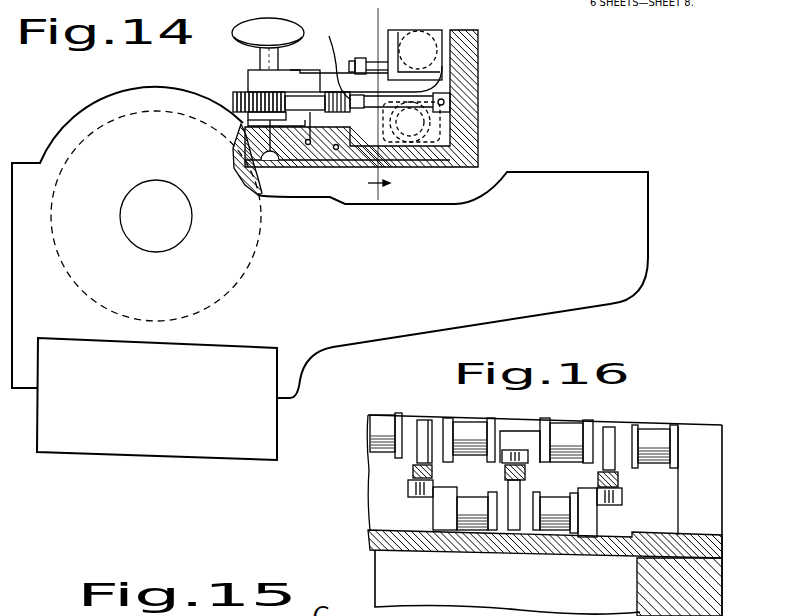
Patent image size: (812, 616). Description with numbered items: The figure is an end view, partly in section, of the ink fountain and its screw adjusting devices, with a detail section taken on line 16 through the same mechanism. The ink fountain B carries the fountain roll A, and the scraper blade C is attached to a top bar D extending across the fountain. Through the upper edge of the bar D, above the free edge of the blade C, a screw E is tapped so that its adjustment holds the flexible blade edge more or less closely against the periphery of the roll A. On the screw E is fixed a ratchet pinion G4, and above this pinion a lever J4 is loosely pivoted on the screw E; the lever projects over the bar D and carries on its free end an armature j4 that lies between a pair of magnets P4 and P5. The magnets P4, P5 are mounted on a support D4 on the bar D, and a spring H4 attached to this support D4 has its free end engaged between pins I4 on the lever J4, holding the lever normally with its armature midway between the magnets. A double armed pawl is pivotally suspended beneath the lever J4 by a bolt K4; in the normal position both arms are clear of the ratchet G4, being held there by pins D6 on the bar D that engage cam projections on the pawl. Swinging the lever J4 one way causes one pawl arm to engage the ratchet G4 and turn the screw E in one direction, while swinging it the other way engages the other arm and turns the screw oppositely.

In FIG. 14, the fountain roll A is at (238, 190).
In FIG. 14, the ink fountain B is at (330, 273).
In FIG. 16, the ink fountain B is at (722, 582).
In FIG. 14, the scraper blade C is at (296, 166).
In FIG. 14, the top bar D is at (460, 168).
In FIG. 16, the top bar D is at (710, 537).
In FIG. 14, the support D4 is at (467, 90).
In FIG. 16, the support D4 is at (437, 425).
In FIG. 14, the pins D6 is at (240, 125).
In FIG. 14, the screw E is at (234, 28).
In FIG. 14, the ratchet pinion G4 is at (236, 96).
In FIG. 14, the spring H4 is at (383, 66).
In FIG. 16, the spring H4 is at (410, 494).
In FIG. 14, the pins I4 is at (338, 58).
In FIG. 14, the lever J4 is at (298, 80).
In FIG. 16, the lever J4 is at (413, 470).
In FIG. 14, the armature j4 is at (480, 47).
In FIG. 16, the armature j4 is at (420, 423).
In FIG. 14, the bolt K4 is at (340, 118).
In FIG. 14, the magnet P4 is at (420, 50).
In FIG. 16, the magnet P4 is at (382, 425).
In FIG. 14, the magnet P5 is at (433, 127).
In FIG. 16, the magnet P5 is at (473, 428).
In FIG. 14, the section line 16— 16 is at (377, 116).